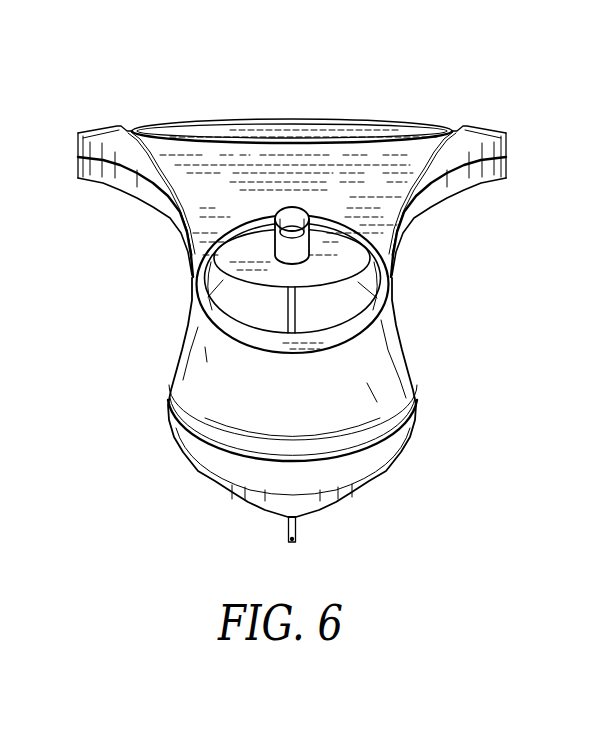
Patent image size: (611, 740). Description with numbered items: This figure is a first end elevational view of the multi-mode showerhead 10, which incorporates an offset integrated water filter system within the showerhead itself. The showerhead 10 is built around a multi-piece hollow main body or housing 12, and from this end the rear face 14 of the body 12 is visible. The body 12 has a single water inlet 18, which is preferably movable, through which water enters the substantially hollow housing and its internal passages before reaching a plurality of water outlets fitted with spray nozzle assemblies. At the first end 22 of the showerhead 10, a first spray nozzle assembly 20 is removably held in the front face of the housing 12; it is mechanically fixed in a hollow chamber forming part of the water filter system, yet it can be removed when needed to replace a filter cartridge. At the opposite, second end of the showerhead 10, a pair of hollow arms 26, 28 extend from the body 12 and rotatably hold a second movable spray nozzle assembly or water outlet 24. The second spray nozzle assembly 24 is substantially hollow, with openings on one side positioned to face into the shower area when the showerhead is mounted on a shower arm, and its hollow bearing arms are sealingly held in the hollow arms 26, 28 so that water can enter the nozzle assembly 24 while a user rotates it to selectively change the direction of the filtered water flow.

The multi-mode showerhead 10 is at (291, 300).
The main body 12 is at (383, 357).
The rear face 14 is at (293, 273).
The water inlet 18 is at (295, 214).
The first spray nozzle assembly 20 is at (344, 502).
The first end 22 is at (372, 427).
The second spray nozzle assembly 24 is at (285, 140).
The hollow arm 26 is at (480, 128).
The hollow arm 28 is at (100, 129).